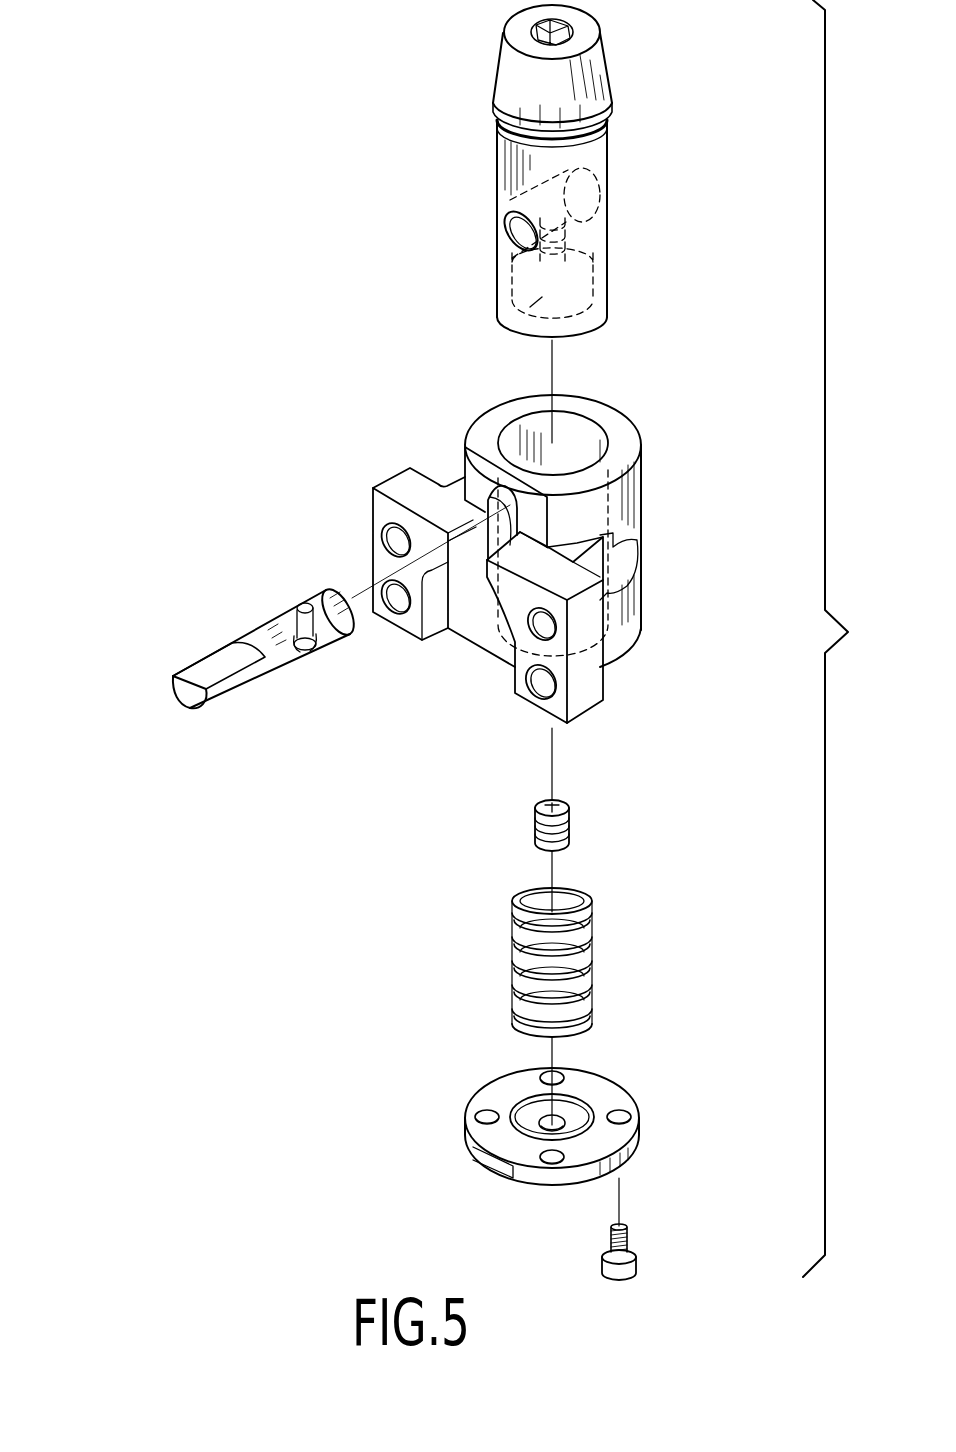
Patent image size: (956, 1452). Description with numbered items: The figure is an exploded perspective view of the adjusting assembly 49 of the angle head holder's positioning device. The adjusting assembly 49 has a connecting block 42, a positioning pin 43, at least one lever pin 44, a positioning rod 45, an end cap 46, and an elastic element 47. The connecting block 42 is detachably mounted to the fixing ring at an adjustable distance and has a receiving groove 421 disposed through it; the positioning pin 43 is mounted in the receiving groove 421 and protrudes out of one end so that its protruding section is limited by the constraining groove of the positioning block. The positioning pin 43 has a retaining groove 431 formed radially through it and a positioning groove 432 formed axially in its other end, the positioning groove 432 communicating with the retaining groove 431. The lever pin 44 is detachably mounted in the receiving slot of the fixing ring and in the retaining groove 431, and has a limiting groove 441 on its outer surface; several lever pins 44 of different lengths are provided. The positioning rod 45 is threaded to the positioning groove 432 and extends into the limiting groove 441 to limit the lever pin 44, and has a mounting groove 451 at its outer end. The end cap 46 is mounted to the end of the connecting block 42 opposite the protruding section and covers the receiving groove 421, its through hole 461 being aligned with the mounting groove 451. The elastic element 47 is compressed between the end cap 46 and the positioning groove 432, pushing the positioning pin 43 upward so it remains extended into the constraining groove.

The connecting block 42 is at (567, 563).
The receiving groove 421 is at (528, 448).
The positioning pin 43 is at (488, 174).
The retaining groove 431 is at (507, 233).
The positioning groove 432 is at (520, 325).
The lever pin 44 is at (260, 637).
The limiting groove 441 is at (283, 667).
The positioning rod 45 is at (607, 820).
The mounting groove 451 is at (563, 847).
The end cap 46 is at (572, 1141).
The through hole 461 is at (560, 1125).
The elastic element 47 is at (580, 972).
The adjusting assembly 49 is at (658, 662).